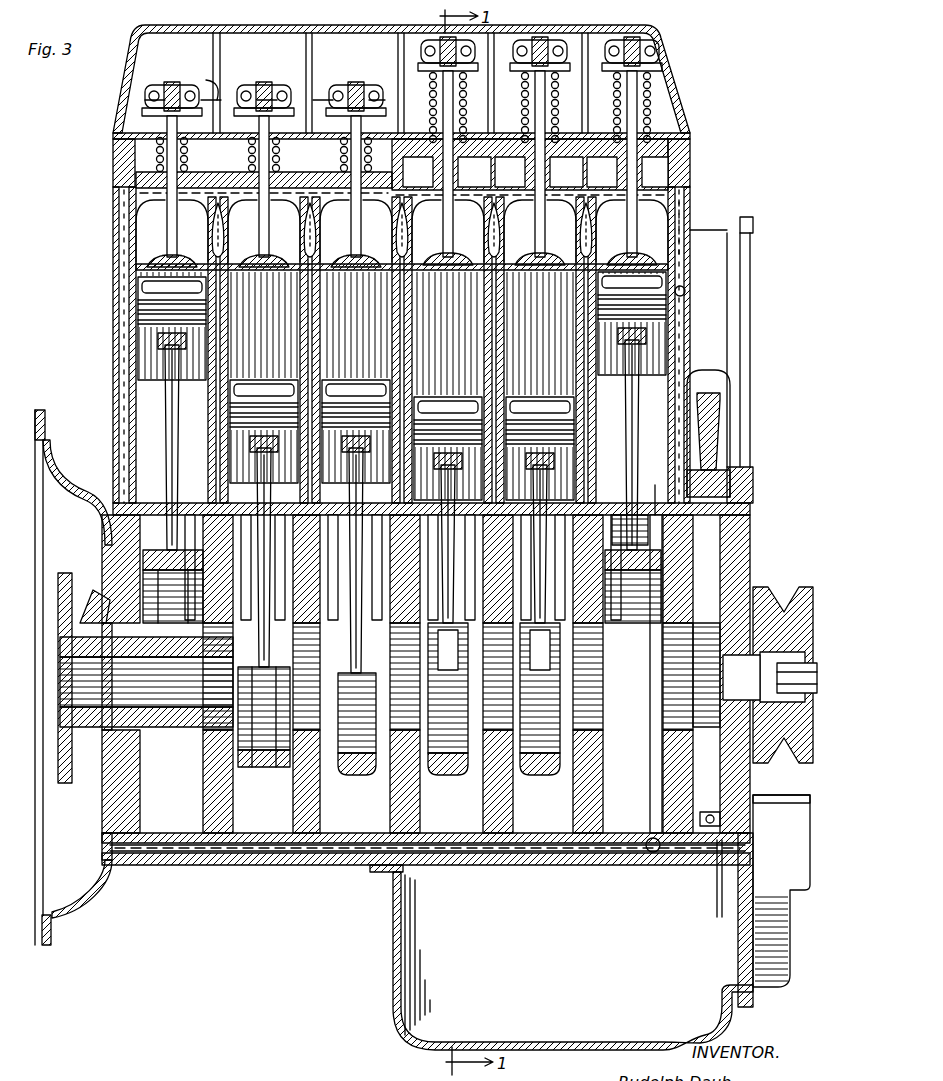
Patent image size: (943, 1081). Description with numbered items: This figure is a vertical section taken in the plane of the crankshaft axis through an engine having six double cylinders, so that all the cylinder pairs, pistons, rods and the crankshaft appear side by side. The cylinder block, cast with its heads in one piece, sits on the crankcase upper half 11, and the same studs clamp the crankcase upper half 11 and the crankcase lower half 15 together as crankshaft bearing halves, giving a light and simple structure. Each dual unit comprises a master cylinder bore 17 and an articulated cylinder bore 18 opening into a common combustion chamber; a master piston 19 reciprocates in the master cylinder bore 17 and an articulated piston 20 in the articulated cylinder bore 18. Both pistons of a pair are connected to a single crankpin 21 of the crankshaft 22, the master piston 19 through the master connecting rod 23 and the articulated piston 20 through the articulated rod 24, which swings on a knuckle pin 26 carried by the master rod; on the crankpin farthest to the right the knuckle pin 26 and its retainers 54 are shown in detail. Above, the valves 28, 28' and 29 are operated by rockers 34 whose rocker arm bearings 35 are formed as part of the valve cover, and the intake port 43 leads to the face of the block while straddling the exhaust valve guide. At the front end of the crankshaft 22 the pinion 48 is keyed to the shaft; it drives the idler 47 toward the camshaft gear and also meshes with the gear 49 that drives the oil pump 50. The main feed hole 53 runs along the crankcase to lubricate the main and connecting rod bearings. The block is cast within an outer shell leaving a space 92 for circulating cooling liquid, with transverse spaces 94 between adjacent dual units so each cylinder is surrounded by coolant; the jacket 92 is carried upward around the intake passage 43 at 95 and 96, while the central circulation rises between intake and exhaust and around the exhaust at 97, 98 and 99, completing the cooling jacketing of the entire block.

The crankcase upper half 11 is at (105, 522).
The crankcase lower half 15 is at (56, 424).
The master cylinder bore 17 is at (132, 405).
The articulated cylinder bore 18 is at (412, 365).
The master piston 19 is at (140, 293).
The articulated piston 20 is at (457, 433).
The crankpin 21 is at (143, 597).
The crankshaft 22 is at (448, 676).
The master connecting rod 23 is at (177, 453).
The articulated rod 24 is at (443, 497).
The knuckle pin 26 is at (479, 640).
The valve 28 is at (218, 191).
The valve spring 28' is at (133, 158).
The valve 29 is at (640, 240).
The rocker 34 is at (165, 85).
The rocker arm bearing 35 is at (265, 82).
The intake port 43 is at (535, 172).
The idler 47 is at (713, 393).
The pinion 48 is at (700, 657).
The gear 49 is at (717, 898).
The oil pump 50 is at (781, 891).
The main feed hole 53 is at (243, 853).
The retainers 54 is at (655, 500).
The space for circulation of cooling liquid 92 is at (120, 350).
The transverse spaces 94 is at (304, 352).
The jacket extension around intake passage 95 is at (118, 235).
The jacket extension around intake passage 96 is at (230, 180).
The central circulation passage 97 is at (482, 195).
The central circulation passage 98 is at (318, 245).
The central circulation passage 99 is at (393, 967).